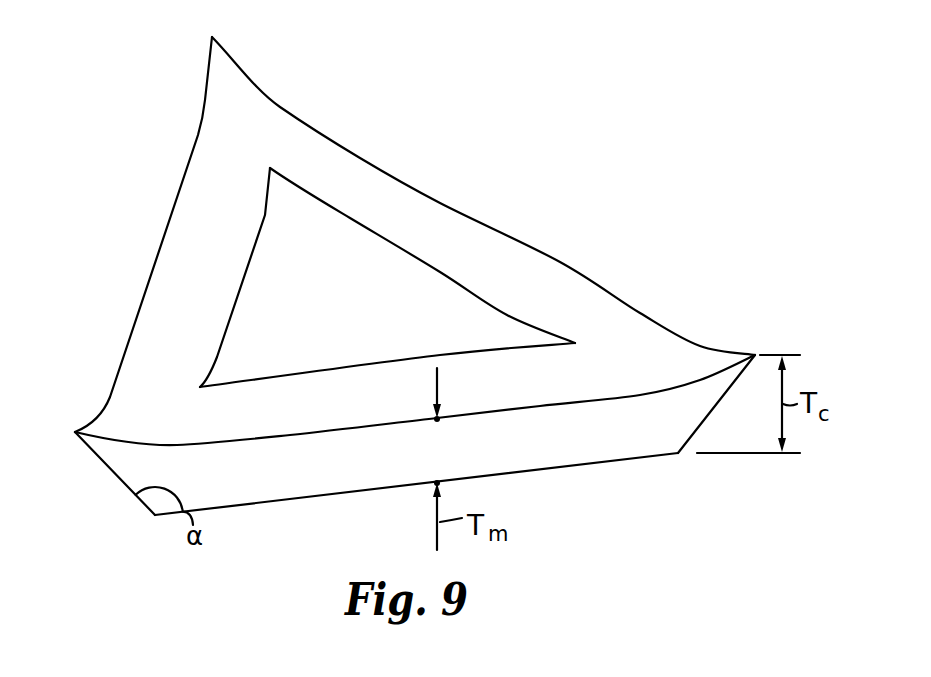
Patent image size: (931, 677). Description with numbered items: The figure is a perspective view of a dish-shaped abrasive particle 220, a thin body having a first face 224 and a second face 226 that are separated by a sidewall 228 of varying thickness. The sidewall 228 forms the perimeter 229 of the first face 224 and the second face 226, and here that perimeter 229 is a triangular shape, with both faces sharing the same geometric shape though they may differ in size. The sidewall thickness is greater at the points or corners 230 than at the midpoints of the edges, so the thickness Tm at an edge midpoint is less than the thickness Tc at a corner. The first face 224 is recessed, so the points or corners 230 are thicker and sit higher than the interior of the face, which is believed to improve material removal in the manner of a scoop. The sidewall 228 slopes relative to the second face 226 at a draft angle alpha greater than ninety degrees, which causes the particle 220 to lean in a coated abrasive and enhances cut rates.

The dish-shaped abrasive particle 220 is at (160, 86).
The first face 224 is at (458, 280).
The second face 226 is at (291, 500).
The sidewall 228 is at (108, 470).
The perimeter 229 is at (163, 240).
The points or corners 230 is at (753, 353).